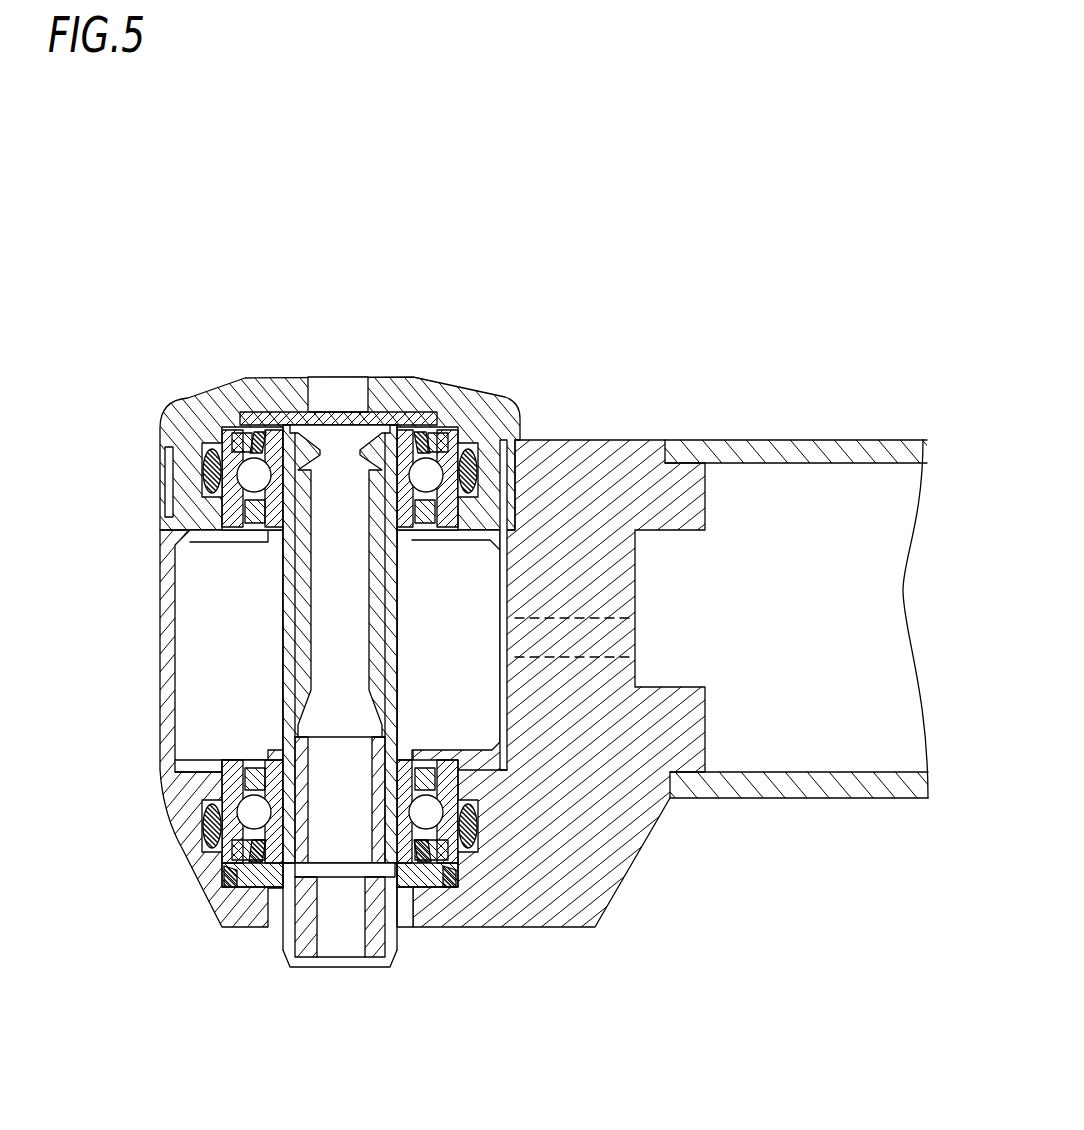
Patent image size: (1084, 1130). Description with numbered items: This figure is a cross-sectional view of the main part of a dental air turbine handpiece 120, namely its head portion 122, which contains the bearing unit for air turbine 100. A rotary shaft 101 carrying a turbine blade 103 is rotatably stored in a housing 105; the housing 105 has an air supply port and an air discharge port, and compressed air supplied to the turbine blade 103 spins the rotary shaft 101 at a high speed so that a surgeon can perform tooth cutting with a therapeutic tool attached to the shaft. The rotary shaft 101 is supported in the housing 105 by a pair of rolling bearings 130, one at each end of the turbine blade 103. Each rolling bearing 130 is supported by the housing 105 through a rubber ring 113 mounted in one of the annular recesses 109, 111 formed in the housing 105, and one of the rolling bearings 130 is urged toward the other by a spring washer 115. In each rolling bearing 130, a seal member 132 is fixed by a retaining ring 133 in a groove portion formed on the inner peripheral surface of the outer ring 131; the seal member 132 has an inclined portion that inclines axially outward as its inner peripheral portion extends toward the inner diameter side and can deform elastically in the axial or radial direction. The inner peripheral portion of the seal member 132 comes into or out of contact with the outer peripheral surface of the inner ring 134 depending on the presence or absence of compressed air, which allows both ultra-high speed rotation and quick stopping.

The bearing unit for air turbine 100 is at (364, 300).
The rotary shaft 101 is at (290, 580).
The turbine blade 103 is at (205, 652).
The housing 105 is at (165, 728).
The annular recess 109 is at (458, 440).
The annular recess 111 is at (467, 855).
The rubber ring 113 is at (205, 472).
The spring washer 115 is at (236, 878).
The dental air turbine handpiece 120 is at (690, 198).
The head portion 122 is at (190, 397).
The rolling bearing 130 is at (258, 420).
The outer ring 131 is at (212, 774).
The seal member 132 is at (265, 885).
The retaining ring 133 is at (252, 865).
The inner ring 134 is at (286, 842).